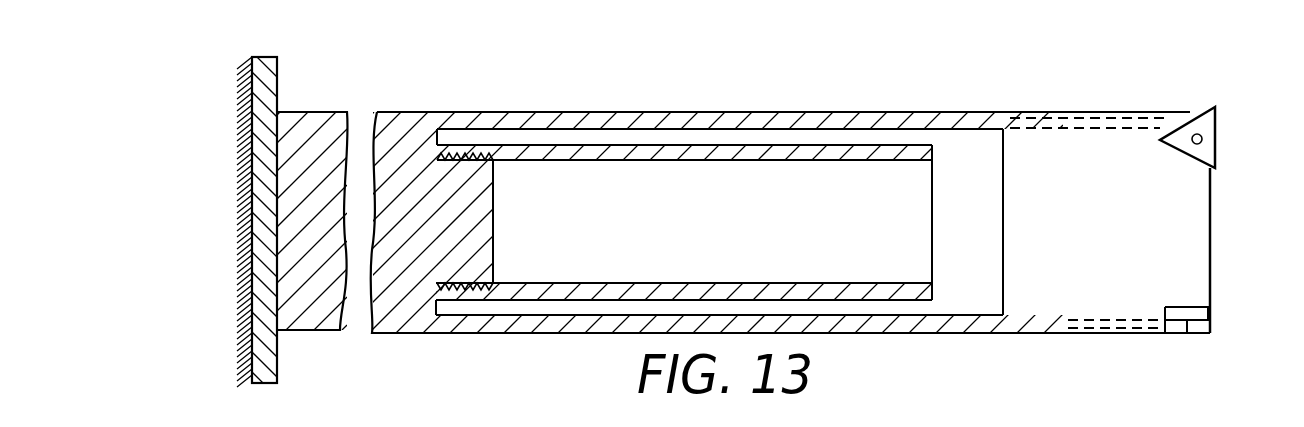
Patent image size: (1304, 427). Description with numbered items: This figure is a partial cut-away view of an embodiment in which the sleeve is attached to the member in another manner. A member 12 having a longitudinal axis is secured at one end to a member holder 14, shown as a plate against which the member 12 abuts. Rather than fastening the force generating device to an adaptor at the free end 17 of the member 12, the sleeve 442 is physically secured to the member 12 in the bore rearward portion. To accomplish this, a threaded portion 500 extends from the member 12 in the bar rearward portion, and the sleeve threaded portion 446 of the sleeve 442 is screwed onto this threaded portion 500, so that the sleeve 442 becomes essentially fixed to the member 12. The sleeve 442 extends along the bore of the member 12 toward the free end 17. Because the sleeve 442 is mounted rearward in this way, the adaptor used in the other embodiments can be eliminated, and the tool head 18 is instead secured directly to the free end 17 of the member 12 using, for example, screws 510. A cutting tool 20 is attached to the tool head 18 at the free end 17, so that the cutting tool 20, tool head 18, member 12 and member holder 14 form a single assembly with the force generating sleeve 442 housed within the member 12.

The member holder 14 is at (266, 57).
The member 12 is at (313, 112).
The sleeve threaded portion 446 is at (448, 151).
The threaded portion 500 is at (455, 200).
The sleeve 442 is at (733, 160).
The free end 17 is at (1075, 126).
The cutting tool 20 is at (1218, 122).
The tool head 18 is at (1212, 246).
The screws 510 is at (1175, 307).